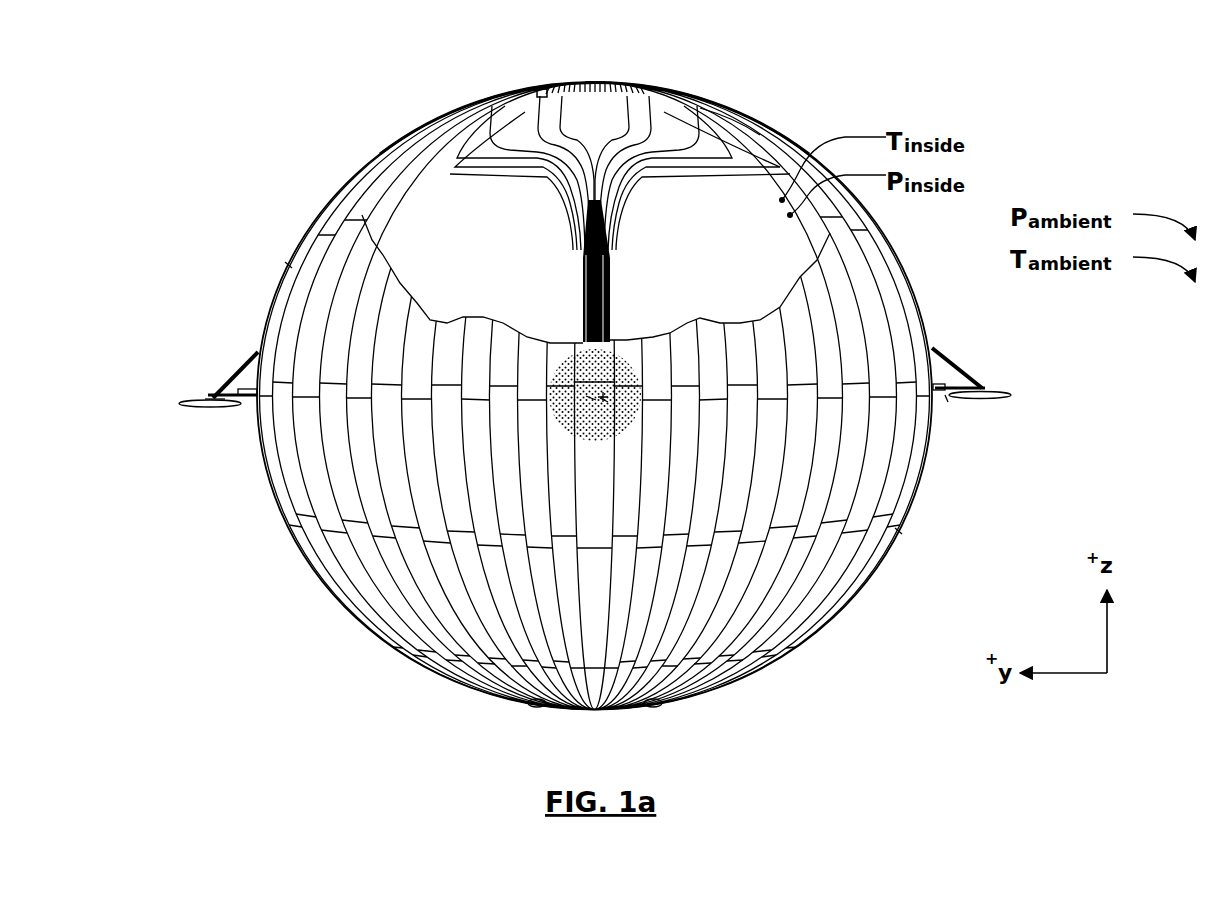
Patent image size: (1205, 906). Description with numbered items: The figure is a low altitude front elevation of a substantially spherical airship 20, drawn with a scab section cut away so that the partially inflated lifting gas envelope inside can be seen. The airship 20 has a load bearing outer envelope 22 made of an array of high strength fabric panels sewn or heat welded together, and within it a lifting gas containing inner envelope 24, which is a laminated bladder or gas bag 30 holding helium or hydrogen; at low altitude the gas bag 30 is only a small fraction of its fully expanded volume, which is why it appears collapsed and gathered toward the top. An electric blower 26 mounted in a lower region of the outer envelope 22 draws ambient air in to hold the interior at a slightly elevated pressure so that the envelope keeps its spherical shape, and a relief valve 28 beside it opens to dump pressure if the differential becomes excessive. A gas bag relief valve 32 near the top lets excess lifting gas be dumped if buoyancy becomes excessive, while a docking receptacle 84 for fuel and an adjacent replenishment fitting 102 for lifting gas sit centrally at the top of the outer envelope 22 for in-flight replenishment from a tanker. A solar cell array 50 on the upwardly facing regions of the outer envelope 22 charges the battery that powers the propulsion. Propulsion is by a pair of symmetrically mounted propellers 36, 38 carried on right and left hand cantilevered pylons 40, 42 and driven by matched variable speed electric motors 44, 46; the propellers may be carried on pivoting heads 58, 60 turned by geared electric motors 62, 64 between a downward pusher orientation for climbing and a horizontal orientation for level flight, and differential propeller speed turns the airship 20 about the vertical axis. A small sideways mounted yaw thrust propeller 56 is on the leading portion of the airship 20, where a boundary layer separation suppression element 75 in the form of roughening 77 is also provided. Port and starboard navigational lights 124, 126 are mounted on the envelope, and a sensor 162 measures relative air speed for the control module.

The airship 20 is at (277, 120).
The outer envelope 22 is at (302, 560).
The inner envelope 24 is at (712, 117).
The blower 26 is at (502, 701).
The relief valve 28 is at (470, 689).
The gas bag 30 is at (413, 170).
The gas bag relief valve 32 is at (537, 93).
The propeller 36 is at (182, 403).
The propeller 38 is at (1005, 396).
The cantilevered pylon 40 is at (232, 393).
The cantilevered pylon 42 is at (935, 351).
The variable speed electric motor 44 is at (210, 398).
The variable speed electric motor 46 is at (985, 391).
The solar cell array 50 is at (290, 264).
The yaw thrust propeller 56 is at (637, 413).
The pivoting head 58 is at (212, 397).
The pivoting head 60 is at (962, 388).
The electric motor 62 is at (258, 352).
The electric motor 64 is at (948, 399).
The boundary layer separation suppression element 75 is at (603, 397).
The roughening 77 is at (605, 400).
The docking receptacle 84 is at (584, 84).
The replenishment fitting 102 is at (605, 82).
The navigational light 124 is at (898, 531).
The navigational light 126 is at (316, 217).
The relative air speed sensor 162 is at (592, 398).